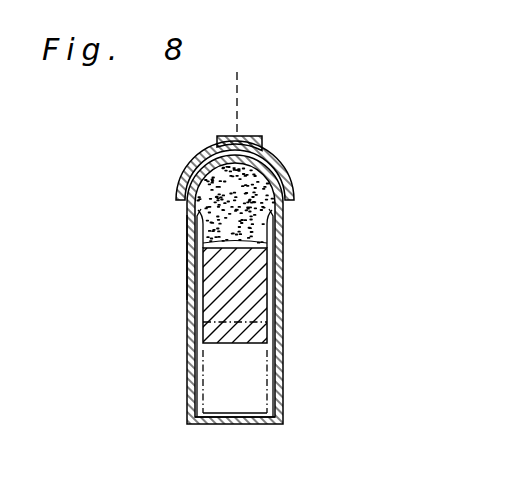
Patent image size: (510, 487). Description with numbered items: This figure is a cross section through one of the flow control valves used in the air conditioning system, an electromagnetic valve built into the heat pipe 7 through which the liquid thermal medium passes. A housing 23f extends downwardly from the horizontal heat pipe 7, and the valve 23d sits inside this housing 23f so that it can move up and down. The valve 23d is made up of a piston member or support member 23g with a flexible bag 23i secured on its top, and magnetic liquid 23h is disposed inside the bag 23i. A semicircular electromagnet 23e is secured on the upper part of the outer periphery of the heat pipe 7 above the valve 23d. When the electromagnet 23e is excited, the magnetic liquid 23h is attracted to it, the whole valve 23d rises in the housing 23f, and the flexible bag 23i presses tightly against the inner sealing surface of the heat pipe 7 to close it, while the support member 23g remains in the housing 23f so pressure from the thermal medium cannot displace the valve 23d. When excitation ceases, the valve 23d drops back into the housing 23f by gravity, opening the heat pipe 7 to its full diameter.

The heat pipe 7 is at (187, 225).
The valve 23d is at (300, 312).
The semicircular electromagnet 23e is at (276, 157).
The housing 23f is at (263, 405).
The piston member or support member 23g is at (200, 318).
The magnetic liquid 23h is at (257, 202).
The flexible bag 23i is at (290, 207).